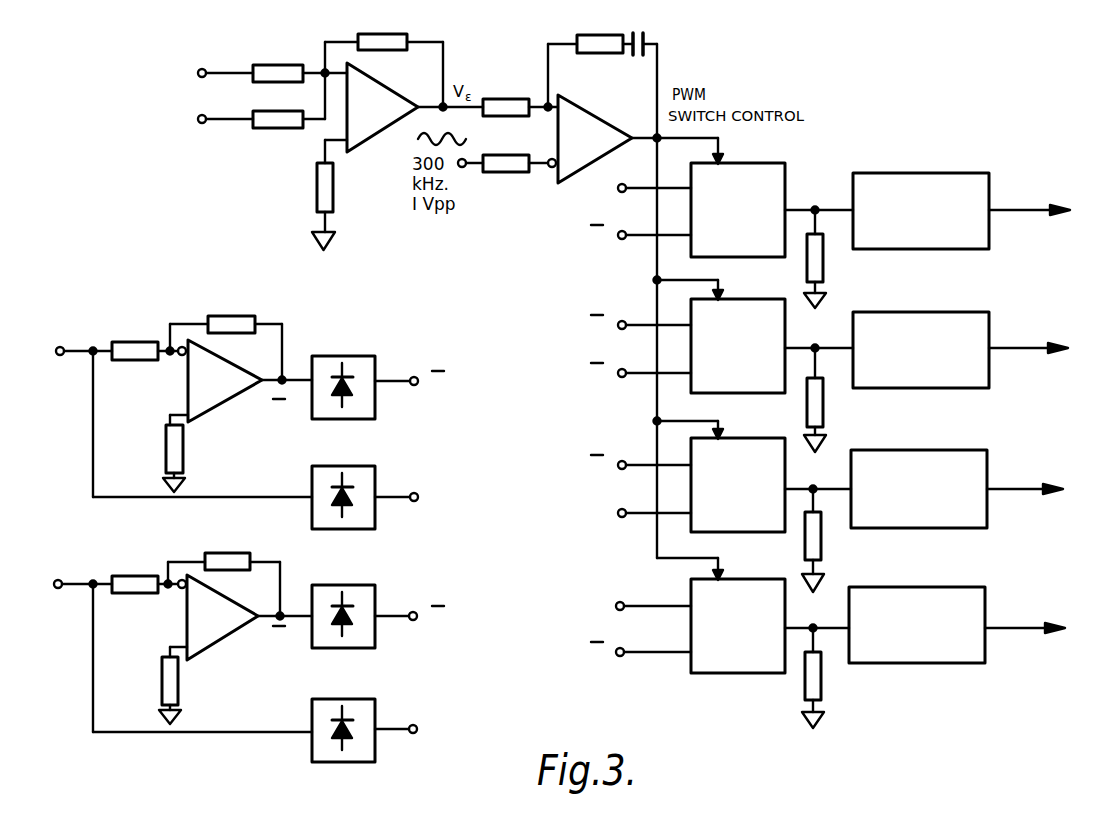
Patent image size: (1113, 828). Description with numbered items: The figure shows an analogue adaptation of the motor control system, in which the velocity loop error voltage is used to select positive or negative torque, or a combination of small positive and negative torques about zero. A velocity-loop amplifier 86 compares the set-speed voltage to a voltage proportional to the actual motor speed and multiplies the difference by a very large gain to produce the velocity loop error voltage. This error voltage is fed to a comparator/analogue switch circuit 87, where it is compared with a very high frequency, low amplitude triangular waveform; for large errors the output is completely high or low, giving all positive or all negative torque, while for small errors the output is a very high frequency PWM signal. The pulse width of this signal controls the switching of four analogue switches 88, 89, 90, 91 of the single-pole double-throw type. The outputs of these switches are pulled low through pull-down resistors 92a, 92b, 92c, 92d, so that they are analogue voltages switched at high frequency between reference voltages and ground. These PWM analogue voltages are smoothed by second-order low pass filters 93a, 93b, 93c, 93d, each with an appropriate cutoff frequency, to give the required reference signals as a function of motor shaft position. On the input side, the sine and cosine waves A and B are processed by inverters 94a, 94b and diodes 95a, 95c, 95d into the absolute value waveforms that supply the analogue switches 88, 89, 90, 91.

The velocity-loop amplifier 86 is at (370, 128).
The comparator/analogue switch circuit 87 is at (567, 168).
The analogue switch 88 is at (733, 247).
The analogue switch 89 is at (733, 383).
The analogue switch 90 is at (748, 532).
The analogue switch 91 is at (740, 663).
The pull-down resistor 92a is at (823, 258).
The pull-down resistor 92b is at (823, 402).
The pull-down resistor 92c is at (821, 538).
The pull-down resistor 92d is at (821, 676).
The second-order low pass filter 93a is at (972, 238).
The second-order low pass filter 93b is at (972, 372).
The second-order low pass filter 93c is at (973, 513).
The second-order low pass filter 93d is at (968, 655).
The inverter 94a is at (215, 398).
The inverter 94b is at (212, 634).
The diode 95a is at (365, 405).
The diode 95c is at (365, 640).
The diode 95d is at (365, 752).